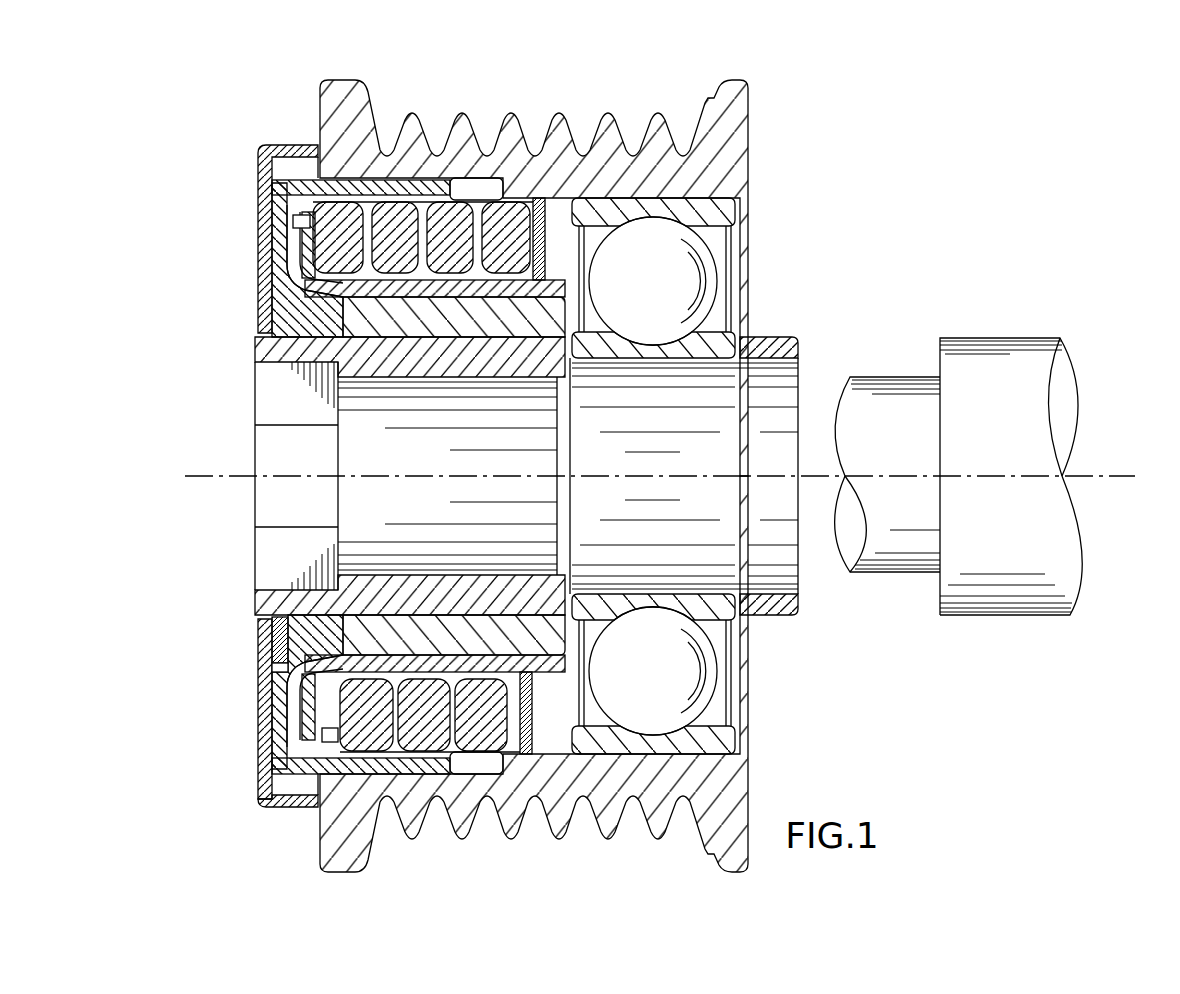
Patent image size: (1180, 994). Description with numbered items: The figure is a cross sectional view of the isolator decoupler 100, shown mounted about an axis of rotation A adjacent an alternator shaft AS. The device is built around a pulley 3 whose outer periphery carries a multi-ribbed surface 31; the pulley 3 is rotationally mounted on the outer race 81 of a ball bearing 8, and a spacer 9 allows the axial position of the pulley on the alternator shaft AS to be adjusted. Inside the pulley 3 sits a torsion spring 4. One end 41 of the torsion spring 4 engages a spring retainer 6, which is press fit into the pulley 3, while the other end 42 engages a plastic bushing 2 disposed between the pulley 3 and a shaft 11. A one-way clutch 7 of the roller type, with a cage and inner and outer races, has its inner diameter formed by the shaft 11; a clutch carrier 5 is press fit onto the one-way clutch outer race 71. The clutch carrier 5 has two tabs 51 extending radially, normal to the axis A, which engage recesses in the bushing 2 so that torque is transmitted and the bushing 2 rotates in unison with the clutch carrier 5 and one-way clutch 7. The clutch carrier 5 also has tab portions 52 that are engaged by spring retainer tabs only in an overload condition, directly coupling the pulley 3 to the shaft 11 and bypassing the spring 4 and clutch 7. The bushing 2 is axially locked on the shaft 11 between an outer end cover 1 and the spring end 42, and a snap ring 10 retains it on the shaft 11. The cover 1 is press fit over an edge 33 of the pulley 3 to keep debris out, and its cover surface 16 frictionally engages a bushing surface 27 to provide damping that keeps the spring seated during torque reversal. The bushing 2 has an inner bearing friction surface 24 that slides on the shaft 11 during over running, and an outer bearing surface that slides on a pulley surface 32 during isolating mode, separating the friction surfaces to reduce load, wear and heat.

The isolator decoupler 100 is at (774, 124).
The outer end cover 1 is at (247, 747).
The plastic bushing 2 is at (300, 700).
The pulley 3 is at (656, 116).
The multi-ribbed surface 31 is at (618, 836).
The pulley surface 32 is at (260, 770).
The pulley edge 33 is at (298, 153).
The torsion spring 4 is at (447, 222).
The spring end 41 is at (512, 208).
The spring end 42 is at (337, 217).
The clutch carrier 5 is at (300, 247).
The tabs 51 is at (292, 232).
The tab portions 52 is at (320, 734).
The spring retainer 6 is at (520, 785).
The one-way clutch 7 is at (413, 648).
The one-way clutch outer race 71 is at (307, 303).
The ball bearing 8 is at (680, 272).
The outer race 81 is at (725, 738).
The spacer 9 is at (780, 348).
The snap ring 10 is at (282, 630).
The shaft 11 is at (275, 350).
The cover surface 16 is at (268, 190).
The inner bearing friction surface 24 is at (312, 375).
The bushing surface 27 is at (272, 677).
The axis of rotation A is at (664, 476).
The alternator shaft AS is at (1010, 370).